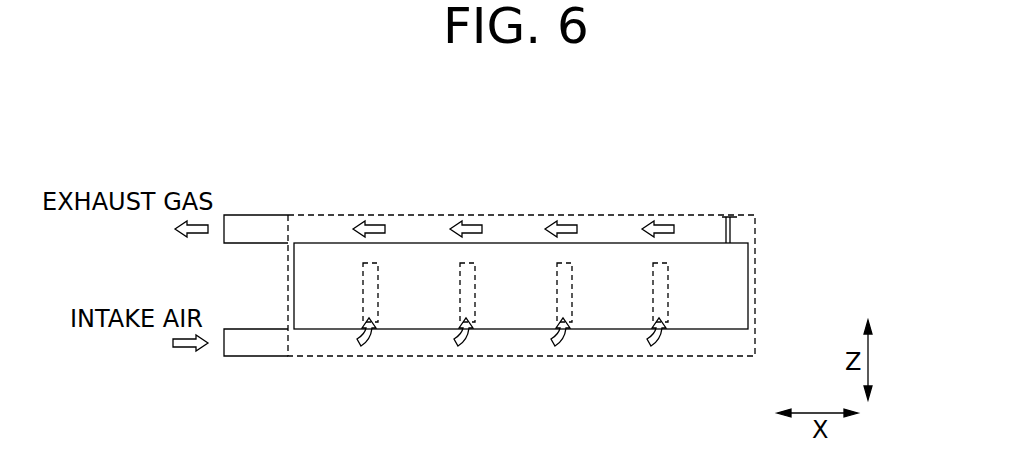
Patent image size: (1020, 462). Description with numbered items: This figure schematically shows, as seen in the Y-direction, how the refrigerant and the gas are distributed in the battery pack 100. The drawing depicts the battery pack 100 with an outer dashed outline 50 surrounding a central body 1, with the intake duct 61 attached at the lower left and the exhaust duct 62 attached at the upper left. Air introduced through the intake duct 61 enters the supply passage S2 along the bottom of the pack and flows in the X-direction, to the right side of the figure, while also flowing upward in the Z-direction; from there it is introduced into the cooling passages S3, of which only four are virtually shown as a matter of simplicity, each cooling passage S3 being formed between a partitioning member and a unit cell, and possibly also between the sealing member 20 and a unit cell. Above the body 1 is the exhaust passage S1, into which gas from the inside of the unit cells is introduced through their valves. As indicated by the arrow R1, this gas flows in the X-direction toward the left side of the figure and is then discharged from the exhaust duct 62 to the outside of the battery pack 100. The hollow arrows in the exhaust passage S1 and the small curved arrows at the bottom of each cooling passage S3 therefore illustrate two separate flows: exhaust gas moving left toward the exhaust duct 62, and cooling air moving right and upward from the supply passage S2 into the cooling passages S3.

The battery pack 100 is at (521, 205).
The housing 50 is at (518, 358).
The heat exchanger 1 is at (337, 234).
The exhaust duct 62 is at (251, 227).
The intake duct 61 is at (250, 346).
The exhaust passage S1 is at (415, 226).
The arrow R1 is at (463, 236).
The sealing member 20 is at (725, 217).
The cooling passage S3 is at (379, 289).
The supply passage S2 is at (416, 340).